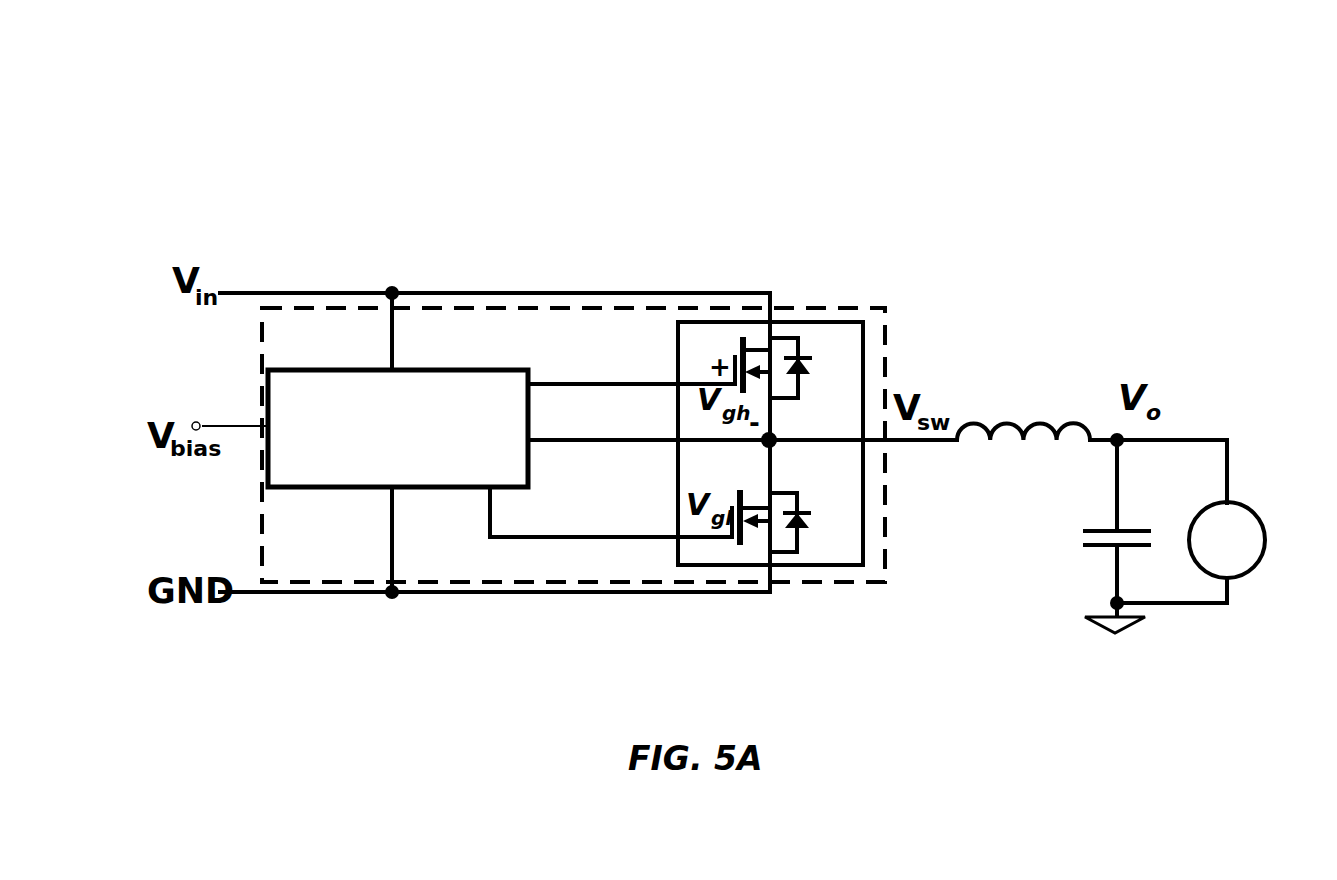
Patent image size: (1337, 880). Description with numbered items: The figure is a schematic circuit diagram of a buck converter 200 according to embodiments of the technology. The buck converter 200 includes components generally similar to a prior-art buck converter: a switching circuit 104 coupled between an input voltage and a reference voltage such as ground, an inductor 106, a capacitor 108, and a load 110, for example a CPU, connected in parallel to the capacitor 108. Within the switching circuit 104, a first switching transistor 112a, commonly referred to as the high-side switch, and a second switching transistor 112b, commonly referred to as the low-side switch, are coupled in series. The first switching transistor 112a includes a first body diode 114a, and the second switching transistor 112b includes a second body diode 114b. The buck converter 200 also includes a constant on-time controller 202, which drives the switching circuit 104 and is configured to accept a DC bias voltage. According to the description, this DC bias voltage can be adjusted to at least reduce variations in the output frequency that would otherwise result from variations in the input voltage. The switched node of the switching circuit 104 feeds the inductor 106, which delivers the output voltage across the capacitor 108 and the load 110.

The buck converter 200 is at (1132, 246).
The constant T_on controller 202 is at (520, 368).
The switching circuit 104 is at (855, 322).
The first switching transistor 112a is at (741, 340).
The first body diode 114a is at (811, 356).
The second switching transistor 112b is at (740, 542).
The second body diode 114b is at (808, 527).
The inductor 106 is at (1007, 413).
The capacitor 108 is at (1087, 548).
The load 110 is at (1240, 505).